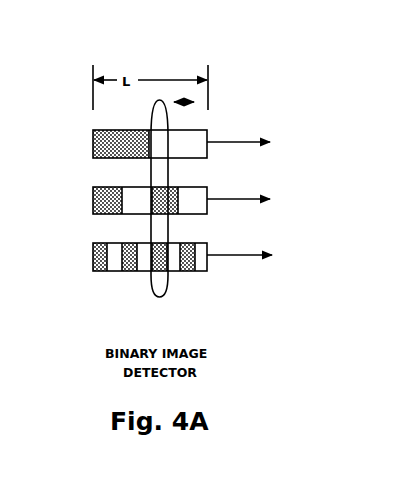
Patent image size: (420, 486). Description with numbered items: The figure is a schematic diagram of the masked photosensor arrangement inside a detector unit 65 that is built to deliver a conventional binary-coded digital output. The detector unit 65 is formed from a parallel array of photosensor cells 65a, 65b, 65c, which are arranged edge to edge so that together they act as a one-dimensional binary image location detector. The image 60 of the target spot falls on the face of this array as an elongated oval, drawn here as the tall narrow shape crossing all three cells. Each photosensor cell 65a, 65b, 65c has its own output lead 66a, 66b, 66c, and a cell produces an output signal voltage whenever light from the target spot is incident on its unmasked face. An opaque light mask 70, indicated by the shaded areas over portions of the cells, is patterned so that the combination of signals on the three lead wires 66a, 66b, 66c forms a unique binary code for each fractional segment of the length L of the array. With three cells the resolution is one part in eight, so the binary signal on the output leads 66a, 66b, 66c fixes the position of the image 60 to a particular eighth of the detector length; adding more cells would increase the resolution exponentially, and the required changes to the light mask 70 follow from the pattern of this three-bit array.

The image 60 is at (164, 289).
The detector unit 65 is at (142, 204).
The photosensor cell 65a is at (207, 266).
The photosensor cell 65b is at (207, 209).
The photosensor cell 65c is at (207, 152).
The output lead 66a is at (222, 254).
The output lead 66b is at (221, 198).
The output lead 66c is at (220, 141).
The light mask 70 is at (124, 148).